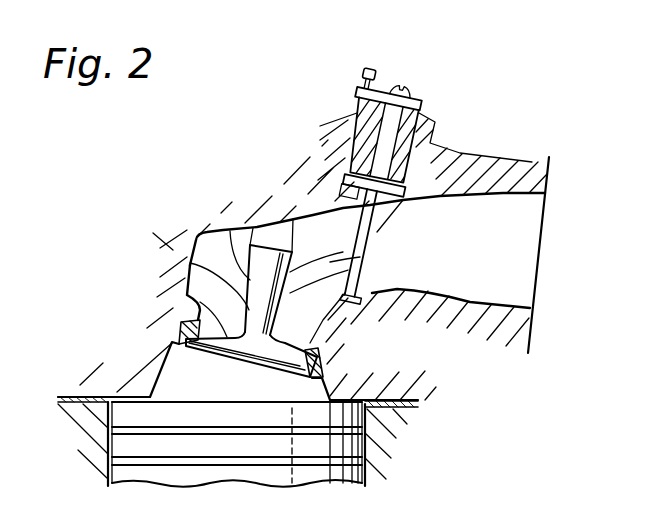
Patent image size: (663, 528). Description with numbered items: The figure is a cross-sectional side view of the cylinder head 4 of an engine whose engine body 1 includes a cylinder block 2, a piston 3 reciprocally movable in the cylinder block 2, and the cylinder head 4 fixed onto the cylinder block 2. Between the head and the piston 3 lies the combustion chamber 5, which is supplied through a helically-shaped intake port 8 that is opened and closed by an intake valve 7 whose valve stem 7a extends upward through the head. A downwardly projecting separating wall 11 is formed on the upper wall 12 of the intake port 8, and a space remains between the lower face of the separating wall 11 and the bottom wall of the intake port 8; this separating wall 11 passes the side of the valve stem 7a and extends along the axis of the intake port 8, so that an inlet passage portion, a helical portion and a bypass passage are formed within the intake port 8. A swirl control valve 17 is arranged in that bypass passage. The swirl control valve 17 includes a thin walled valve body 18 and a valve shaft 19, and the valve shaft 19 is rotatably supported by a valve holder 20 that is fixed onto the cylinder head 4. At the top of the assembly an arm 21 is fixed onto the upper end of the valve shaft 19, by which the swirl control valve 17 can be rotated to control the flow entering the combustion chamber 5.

The engine body 1 is at (427, 437).
The cylinder block 2 is at (368, 462).
The piston 3 is at (153, 471).
The cylinder head 4 is at (503, 165).
The combustion chamber 5 is at (180, 372).
The intake valve 7 is at (188, 297).
The valve stem 7a is at (186, 250).
The intake port 8 is at (528, 242).
The separating wall 11 is at (303, 260).
The upper wall 12 is at (317, 212).
The swirl control valve 17 is at (368, 252).
The valve body 18 is at (358, 270).
The valve shaft 19 is at (396, 130).
The valve holder 20 is at (411, 160).
The arm 21 is at (372, 92).